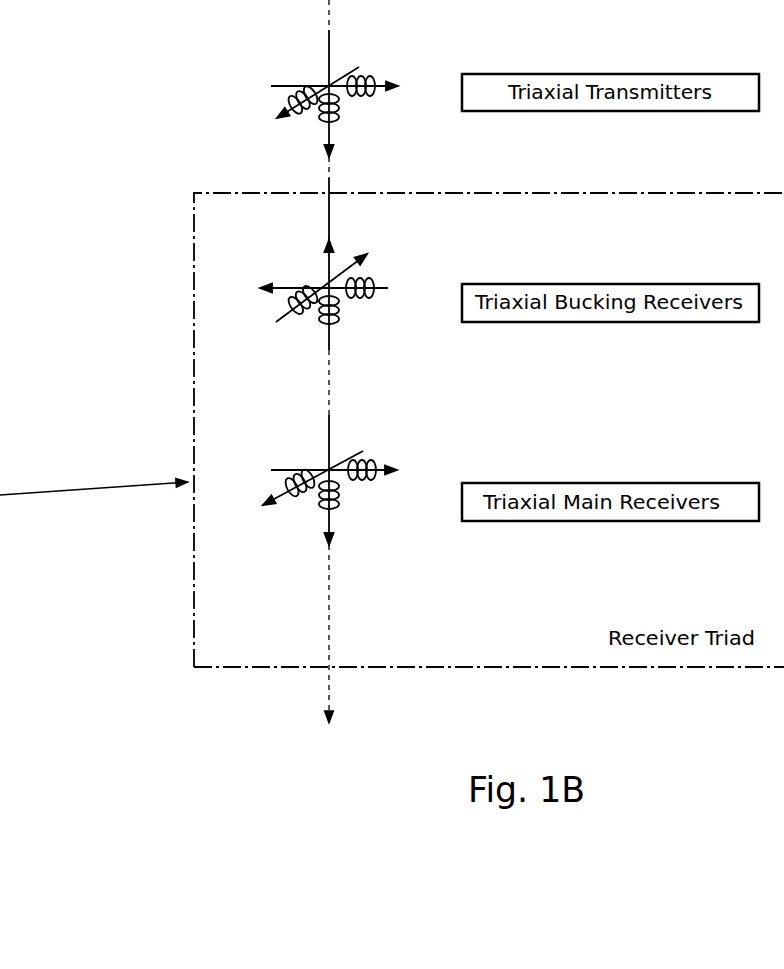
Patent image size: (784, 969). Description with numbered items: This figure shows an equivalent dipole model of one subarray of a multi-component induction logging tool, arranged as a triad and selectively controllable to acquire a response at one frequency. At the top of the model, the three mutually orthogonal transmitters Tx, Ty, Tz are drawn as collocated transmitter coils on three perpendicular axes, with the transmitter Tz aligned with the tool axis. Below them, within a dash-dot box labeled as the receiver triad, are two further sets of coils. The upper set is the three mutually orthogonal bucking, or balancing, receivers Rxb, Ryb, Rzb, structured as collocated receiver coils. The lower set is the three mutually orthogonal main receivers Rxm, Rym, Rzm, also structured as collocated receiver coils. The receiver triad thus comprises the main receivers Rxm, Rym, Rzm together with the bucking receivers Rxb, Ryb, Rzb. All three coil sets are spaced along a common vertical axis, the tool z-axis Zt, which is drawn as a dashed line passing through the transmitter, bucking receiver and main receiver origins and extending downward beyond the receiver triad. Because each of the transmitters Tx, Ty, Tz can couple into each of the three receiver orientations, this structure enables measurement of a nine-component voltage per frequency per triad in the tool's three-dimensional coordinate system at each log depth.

The x-axis transmitter Tx is at (342, 106).
The y-axis transmitter Ty is at (298, 107).
The z-axis transmitter Tz is at (343, 102).
The x-axis bucking receiver Rxb is at (303, 284).
The y-axis bucking receiver Ryb is at (339, 266).
The z-axis bucking receiver Rzb is at (304, 264).
The x-axis main receiver Rxm is at (355, 452).
The y-axis main receiver Rym is at (288, 488).
The z-axis main receiver Rzm is at (353, 488).
The tool z-axis Zt is at (357, 638).